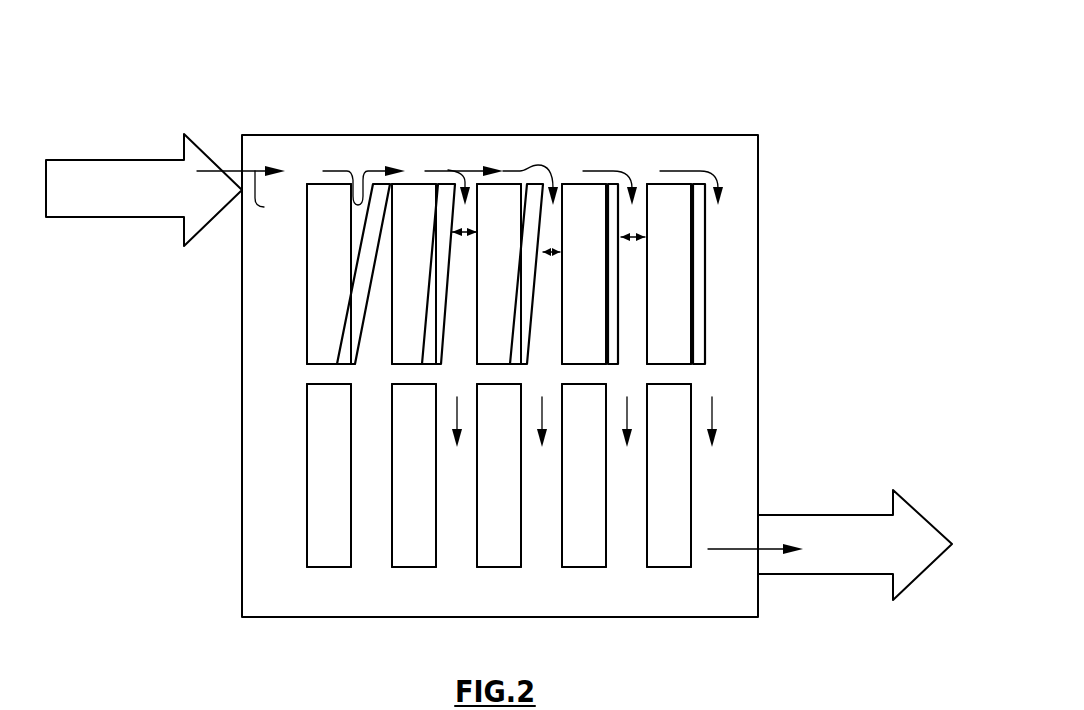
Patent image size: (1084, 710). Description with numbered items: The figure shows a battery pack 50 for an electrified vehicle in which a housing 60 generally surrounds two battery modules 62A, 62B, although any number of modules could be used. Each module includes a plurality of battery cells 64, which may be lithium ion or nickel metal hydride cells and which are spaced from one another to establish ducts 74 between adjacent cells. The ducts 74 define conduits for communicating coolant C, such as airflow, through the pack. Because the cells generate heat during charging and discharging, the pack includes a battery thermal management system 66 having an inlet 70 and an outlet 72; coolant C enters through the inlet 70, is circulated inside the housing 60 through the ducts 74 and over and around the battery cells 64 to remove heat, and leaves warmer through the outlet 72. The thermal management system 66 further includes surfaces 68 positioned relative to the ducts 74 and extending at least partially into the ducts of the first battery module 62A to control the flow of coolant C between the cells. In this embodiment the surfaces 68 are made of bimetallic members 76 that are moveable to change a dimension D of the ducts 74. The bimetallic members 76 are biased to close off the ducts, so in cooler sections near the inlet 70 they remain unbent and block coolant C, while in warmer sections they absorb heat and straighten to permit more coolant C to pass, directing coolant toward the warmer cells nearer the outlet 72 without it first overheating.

The battery pack 50 is at (516, 47).
The housing 60 is at (758, 160).
The first battery module 62A is at (280, 264).
The second battery module 62B is at (280, 459).
The battery cells 64 is at (317, 267).
The battery thermal management system 66 is at (522, 186).
The surfaces 68 is at (347, 346).
The inlet 70 is at (197, 108).
The outlet 72 is at (789, 612).
The ducts 74 is at (373, 322).
The bimetallic members 76 is at (441, 183).
The coolant C is at (727, 587).
The dimension D is at (464, 232).